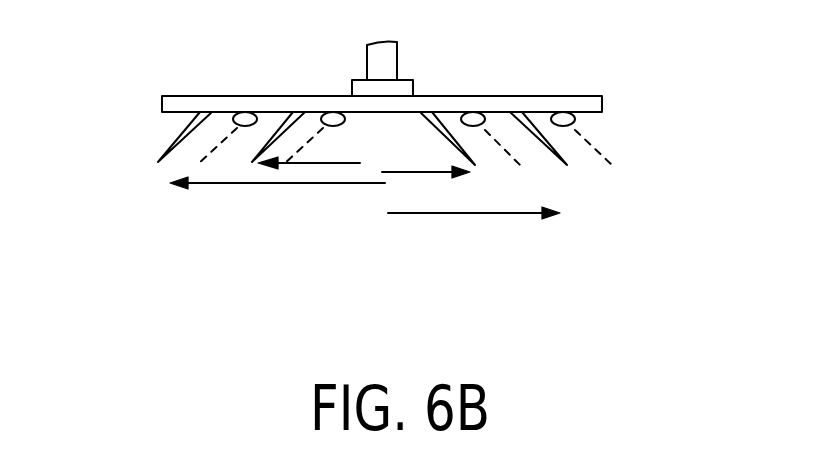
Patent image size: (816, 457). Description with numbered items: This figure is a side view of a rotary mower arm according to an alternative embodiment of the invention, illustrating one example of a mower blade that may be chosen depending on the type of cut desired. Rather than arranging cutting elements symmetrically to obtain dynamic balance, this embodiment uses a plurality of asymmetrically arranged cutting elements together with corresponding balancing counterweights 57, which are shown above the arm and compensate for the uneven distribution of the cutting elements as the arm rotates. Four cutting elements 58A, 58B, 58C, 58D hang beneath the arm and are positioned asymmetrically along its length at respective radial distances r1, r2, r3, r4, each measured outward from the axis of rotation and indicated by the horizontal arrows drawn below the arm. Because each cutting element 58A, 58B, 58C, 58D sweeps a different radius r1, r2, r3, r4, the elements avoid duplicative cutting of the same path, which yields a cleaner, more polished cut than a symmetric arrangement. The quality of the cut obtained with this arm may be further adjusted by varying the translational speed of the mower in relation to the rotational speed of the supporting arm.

The balancing counterweights 57 is at (247, 111).
The cutting element 58A is at (168, 183).
The cutting element 58B is at (255, 165).
The cutting element 58C is at (470, 172).
The cutting element 58D is at (560, 213).
The radial distance r1 is at (323, 184).
The radial distance r2 is at (345, 164).
The radial distance r3 is at (435, 173).
The radial distance r4 is at (470, 214).